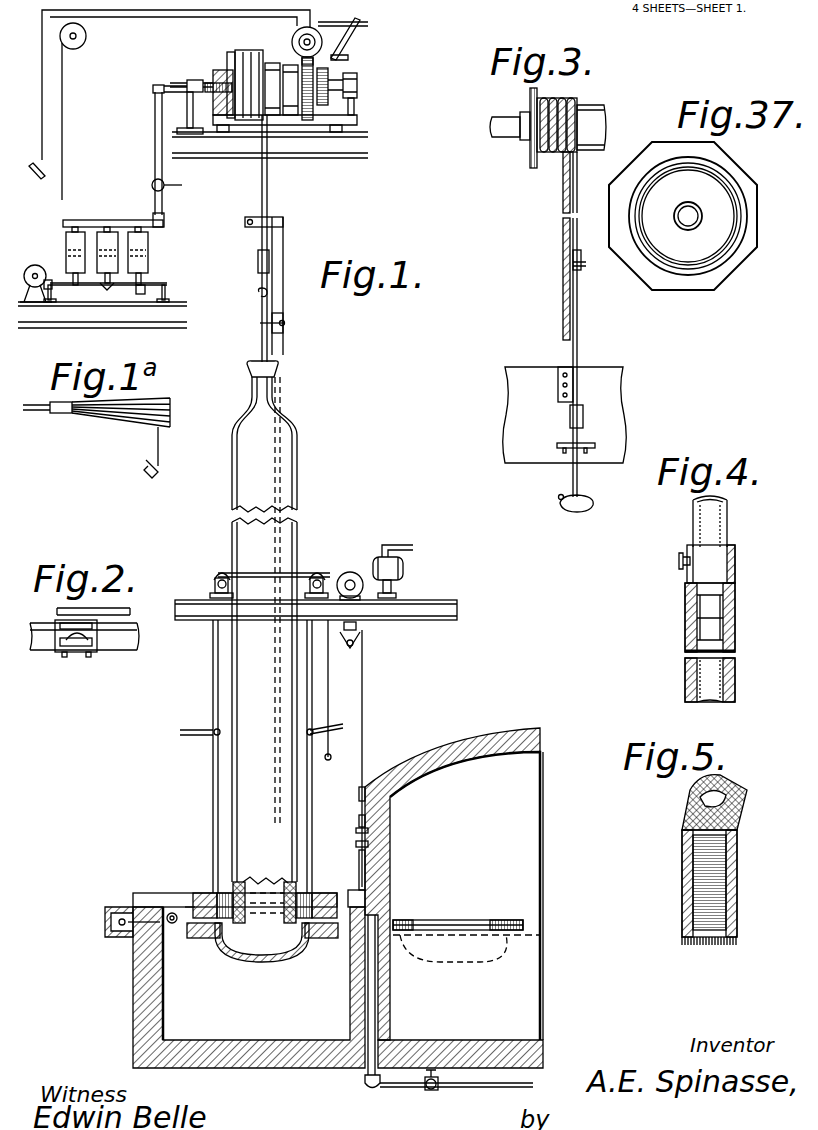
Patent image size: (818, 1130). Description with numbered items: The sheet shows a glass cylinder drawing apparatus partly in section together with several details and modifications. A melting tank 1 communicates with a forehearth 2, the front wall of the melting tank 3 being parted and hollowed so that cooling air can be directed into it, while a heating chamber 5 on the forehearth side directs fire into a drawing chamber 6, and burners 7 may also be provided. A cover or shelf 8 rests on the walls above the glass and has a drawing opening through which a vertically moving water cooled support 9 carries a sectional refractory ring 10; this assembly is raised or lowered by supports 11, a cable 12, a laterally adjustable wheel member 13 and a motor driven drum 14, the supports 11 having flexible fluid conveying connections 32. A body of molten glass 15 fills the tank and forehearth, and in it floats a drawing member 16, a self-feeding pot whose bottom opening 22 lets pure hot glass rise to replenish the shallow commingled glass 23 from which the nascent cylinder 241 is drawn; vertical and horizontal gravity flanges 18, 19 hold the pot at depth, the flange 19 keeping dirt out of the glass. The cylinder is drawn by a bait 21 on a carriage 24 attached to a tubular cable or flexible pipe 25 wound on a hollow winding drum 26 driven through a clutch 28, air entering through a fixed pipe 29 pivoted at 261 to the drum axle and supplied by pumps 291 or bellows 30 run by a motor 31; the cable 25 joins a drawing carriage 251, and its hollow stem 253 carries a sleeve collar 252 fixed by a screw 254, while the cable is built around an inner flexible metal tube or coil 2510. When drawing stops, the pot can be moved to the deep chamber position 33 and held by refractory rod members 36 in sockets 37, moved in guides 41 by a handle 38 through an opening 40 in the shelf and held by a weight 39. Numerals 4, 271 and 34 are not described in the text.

In FIG. 1, the melting tank 1 is at (525, 822).
In FIG. 1, the forehearth 2 is at (277, 1028).
In FIG. 1, the front wall of the melting tank 3 is at (389, 981).
In FIG. 1, the drain pipe 4 is at (366, 1079).
In FIG. 1, the heating chamber 5 is at (115, 937).
In FIG. 1, the drawing chamber 6 is at (186, 907).
In FIG. 1, the burners 7 is at (165, 925).
In FIG. 1, the cover or shelf 8 is at (148, 893).
In FIG. 1, the water cooled support 9 is at (205, 893).
In FIG. 1, the refractory ring 10 is at (357, 843).
In FIG. 1, the support 11 is at (213, 780).
In FIG. 1, the cable 12 is at (330, 573).
In FIG. 2, the cable 12 is at (117, 648).
In FIG. 1, the laterally adjustable wheel member 13 is at (221, 573).
In FIG. 2, the laterally adjustable wheel member 13 is at (93, 608).
In FIG. 1, the drum 14 is at (403, 567).
In FIG. 1, the body of molten glass 15 is at (528, 979).
In FIG. 1, the drawing member 16 is at (216, 942).
In FIG. 1, the vertical gravity flange 18 is at (207, 940).
In FIG. 37, the vertical gravity flange 18 is at (727, 177).
In FIG. 1, the horizontal gravity flange 19 is at (332, 939).
In FIG. 37, the horizontal gravity flange 19 is at (640, 272).
In FIG. 1, the bait 21 is at (272, 368).
In FIG. 3, the bait 21 is at (560, 506).
In FIG. 1, the opening 22 is at (345, 690).
In FIG. 37, the opening 22 is at (693, 218).
In FIG. 1, the commingled glass 23 is at (232, 940).
In FIG. 1, the carriage 24 is at (323, 38).
In FIG. 1, the nascent cylinder 241 is at (254, 882).
In FIG. 1, the tubular cable or flexible pipe 25 is at (268, 198).
In FIG. 5, the tubular cable or flexible pipe 25 is at (738, 823).
In FIG. 1, the drawing carriage 251 is at (283, 248).
In FIG. 5, the drawing carriage 251 is at (683, 921).
In FIG. 1, the sleeve collar 252 is at (258, 262).
In FIG. 4, the sleeve collar 252 is at (687, 640).
In FIG. 1, the hollow stem 253 is at (262, 237).
In FIG. 4, the hollow stem 253 is at (693, 523).
In FIG. 4, the screw 254 is at (677, 562).
In FIG. 5, the inner flexible metal tube or coil 2510 is at (693, 867).
In FIG. 1, the winding drum 26 is at (290, 113).
In FIG. 3, the winding drum 26 is at (598, 114).
In FIG. 1, the pivot 261 is at (212, 80).
In FIG. 1, the lower tube 271 is at (258, 288).
In FIG. 4, the lower tube 271 is at (733, 660).
In FIG. 1, the clutch 28 is at (346, 50).
In FIG. 1, the fixed pipe 29 is at (155, 122).
In FIG. 1, the pumps 291 is at (112, 232).
In FIG. 1a, the bellows 30 is at (168, 402).
In FIG. 3, the bellows 30 is at (563, 300).
In FIG. 1, the motor 31 is at (41, 266).
In FIG. 1, the flexible fluid conveying connections 32 is at (187, 730).
In FIG. 1, the deep heated chamber position 33 is at (433, 920).
In FIG. 1, the tank wall 34 is at (167, 1031).
In FIG. 1, the rod members 36 is at (369, 847).
In FIG. 1, the sockets 37 is at (369, 831).
In FIG. 1, the handle 38 is at (331, 755).
In FIG. 1, the weight 39 is at (362, 653).
In FIG. 1, the opening 40 is at (358, 890).
In FIG. 1, the guides 41 is at (359, 824).